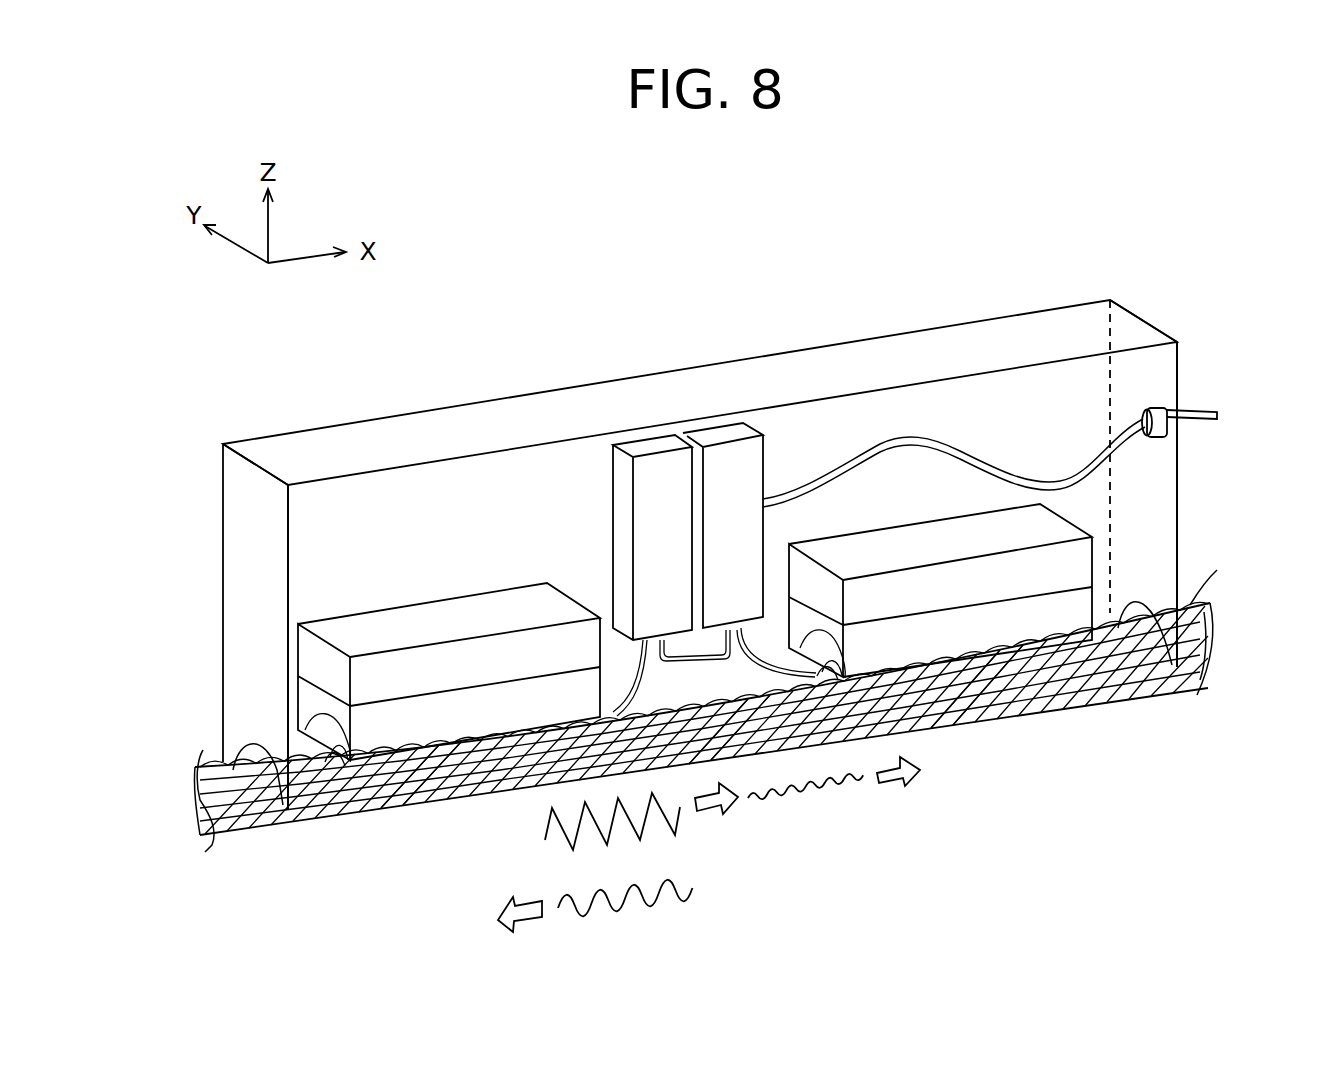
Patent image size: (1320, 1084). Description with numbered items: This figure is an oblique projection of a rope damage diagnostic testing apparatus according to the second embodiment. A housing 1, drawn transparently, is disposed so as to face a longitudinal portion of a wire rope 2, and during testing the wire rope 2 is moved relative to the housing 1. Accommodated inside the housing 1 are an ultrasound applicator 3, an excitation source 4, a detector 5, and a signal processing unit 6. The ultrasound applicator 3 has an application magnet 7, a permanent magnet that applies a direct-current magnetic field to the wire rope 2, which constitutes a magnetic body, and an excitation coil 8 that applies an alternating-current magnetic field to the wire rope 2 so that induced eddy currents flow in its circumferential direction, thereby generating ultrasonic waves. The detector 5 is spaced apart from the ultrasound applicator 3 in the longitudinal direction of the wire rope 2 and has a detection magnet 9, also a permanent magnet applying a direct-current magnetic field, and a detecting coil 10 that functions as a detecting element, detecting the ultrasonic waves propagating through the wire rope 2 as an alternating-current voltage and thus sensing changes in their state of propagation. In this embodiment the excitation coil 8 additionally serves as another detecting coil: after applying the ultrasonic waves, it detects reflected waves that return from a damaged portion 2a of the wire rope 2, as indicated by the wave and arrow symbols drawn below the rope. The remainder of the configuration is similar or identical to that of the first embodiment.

The housing 1 is at (568, 400).
The wire rope 2 is at (257, 832).
The damaged portion 2a is at (727, 720).
The ultrasound applicator 3 is at (338, 580).
The excitation source 4 is at (662, 480).
The detector 5 is at (1000, 512).
The signal processing unit 6 is at (734, 462).
The application magnet 7 is at (412, 615).
The excitation coil 8 is at (398, 760).
The detection magnet 9 is at (905, 537).
The detecting coil 10 is at (967, 670).